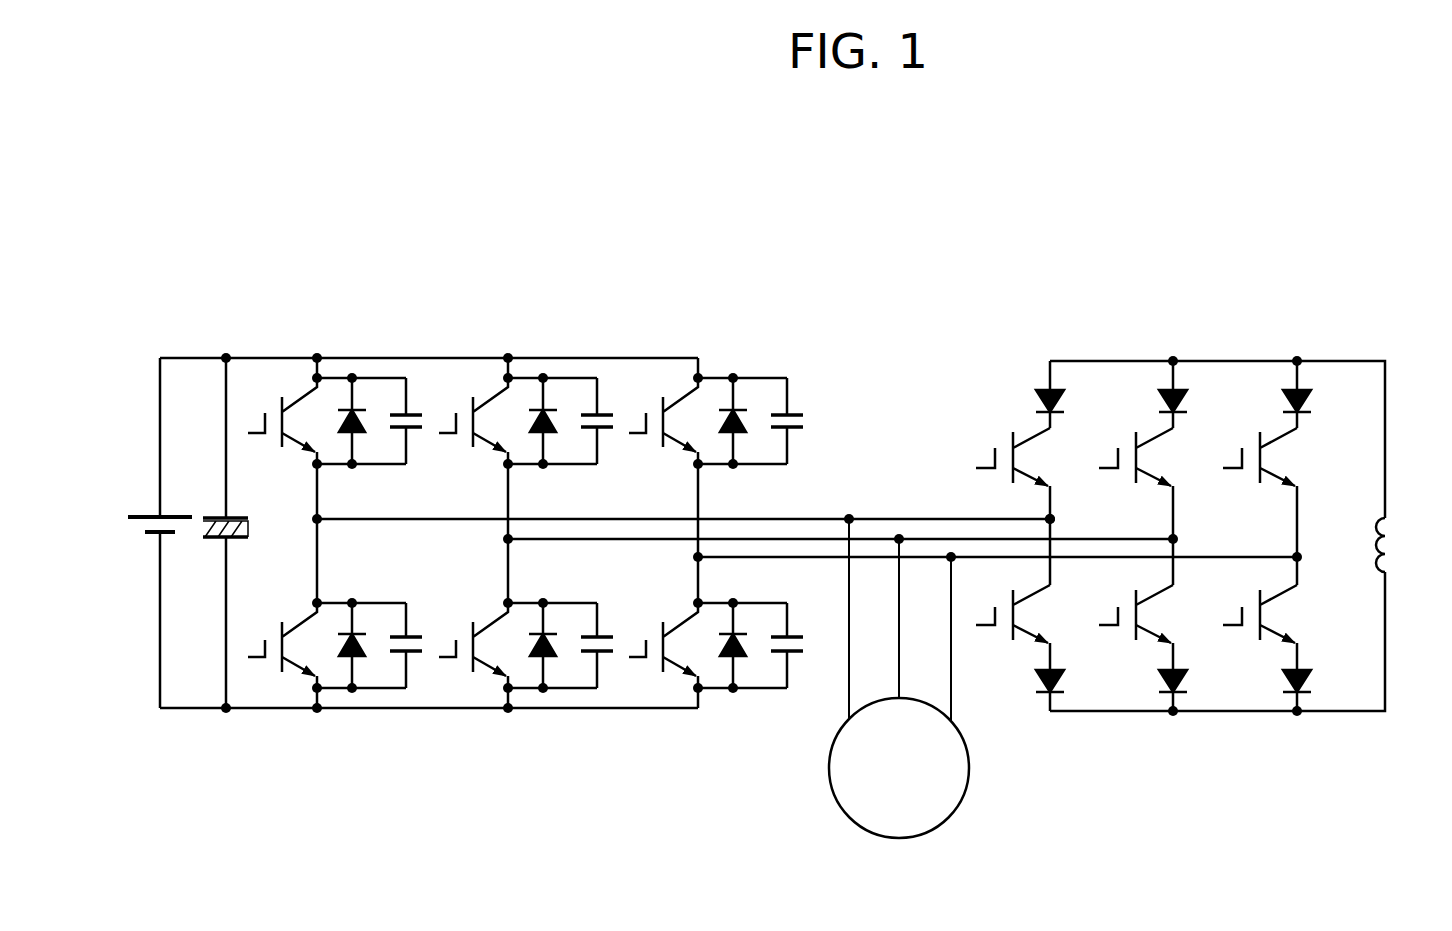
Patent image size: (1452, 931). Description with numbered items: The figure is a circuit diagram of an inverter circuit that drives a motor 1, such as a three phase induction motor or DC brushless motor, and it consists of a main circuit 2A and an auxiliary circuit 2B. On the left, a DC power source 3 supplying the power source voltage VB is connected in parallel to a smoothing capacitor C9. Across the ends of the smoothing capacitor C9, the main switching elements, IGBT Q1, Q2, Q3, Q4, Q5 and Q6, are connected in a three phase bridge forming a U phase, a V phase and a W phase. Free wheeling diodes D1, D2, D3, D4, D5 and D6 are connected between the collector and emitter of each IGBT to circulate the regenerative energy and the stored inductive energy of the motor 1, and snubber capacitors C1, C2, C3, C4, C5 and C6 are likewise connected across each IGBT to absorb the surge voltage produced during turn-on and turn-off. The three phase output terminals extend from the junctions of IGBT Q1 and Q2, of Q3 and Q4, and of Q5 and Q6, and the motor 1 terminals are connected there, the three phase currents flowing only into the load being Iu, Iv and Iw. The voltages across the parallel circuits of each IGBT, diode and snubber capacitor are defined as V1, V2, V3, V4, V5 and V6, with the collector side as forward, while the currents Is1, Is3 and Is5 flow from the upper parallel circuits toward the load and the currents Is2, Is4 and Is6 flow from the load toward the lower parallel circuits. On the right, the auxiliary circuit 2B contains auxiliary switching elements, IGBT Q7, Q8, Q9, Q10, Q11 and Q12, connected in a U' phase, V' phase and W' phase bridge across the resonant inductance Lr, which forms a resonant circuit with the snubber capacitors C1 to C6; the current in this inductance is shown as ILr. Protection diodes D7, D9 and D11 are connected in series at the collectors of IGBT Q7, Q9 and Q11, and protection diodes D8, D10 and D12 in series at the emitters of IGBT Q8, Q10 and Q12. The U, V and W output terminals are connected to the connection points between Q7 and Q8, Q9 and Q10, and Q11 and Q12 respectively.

The motor 1 is at (938, 829).
The main circuit 2A is at (578, 243).
The auxiliary circuit 2B is at (1190, 241).
The DC power source 3 is at (149, 516).
The power source voltage VB is at (124, 552).
The smoothing capacitor C9 is at (215, 541).
The IGBT Q1 is at (294, 400).
The IGBT Q2 is at (298, 672).
The IGBT Q3 is at (483, 400).
The IGBT Q4 is at (489, 672).
The IGBT Q5 is at (673, 400).
The IGBT Q6 is at (679, 672).
The IGBT Q7 is at (1026, 445).
The IGBT Q8 is at (1026, 636).
The IGBT Q9 is at (1149, 445).
The IGBT Q10 is at (1150, 636).
The IGBT Q11 is at (1273, 445).
The IGBT Q12 is at (1275, 636).
The free wheeling diode D1 is at (363, 400).
The free wheeling diode D2 is at (360, 678).
The free wheeling diode D3 is at (554, 400).
The free wheeling diode D4 is at (552, 678).
The free wheeling diode D5 is at (744, 400).
The free wheeling diode D6 is at (742, 678).
The protection diode D7 is at (1058, 396).
The protection diode D8 is at (1061, 684).
The protection diode D9 is at (1181, 396).
The protection diode D10 is at (1183, 684).
The protection diode D11 is at (1305, 396).
The protection diode D12 is at (1308, 684).
The snubber capacitor C1 is at (415, 410).
The snubber capacitor C2 is at (413, 672).
The snubber capacitor C3 is at (606, 410).
The snubber capacitor C4 is at (606, 672).
The snubber capacitor C5 is at (796, 410).
The snubber capacitor C6 is at (796, 672).
The voltage V1 is at (430, 388).
The voltage V2 is at (430, 680).
The voltage V3 is at (621, 388).
The voltage V4 is at (621, 680).
The voltage V5 is at (811, 388).
The voltage V6 is at (811, 680).
The electric current Is1 is at (370, 510).
The electric current Is2 is at (378, 528).
The electric current Is3 is at (560, 528).
The electric current Is4 is at (568, 648).
The electric current Is5 is at (750, 548).
The electric current Is6 is at (760, 667).
The three phase electric current Iu is at (862, 676).
The three phase electric current Iv is at (912, 671).
The three phase electric current Iw is at (963, 711).
The resonant inductance Lr is at (1390, 563).
The reactor current ILr is at (1347, 578).